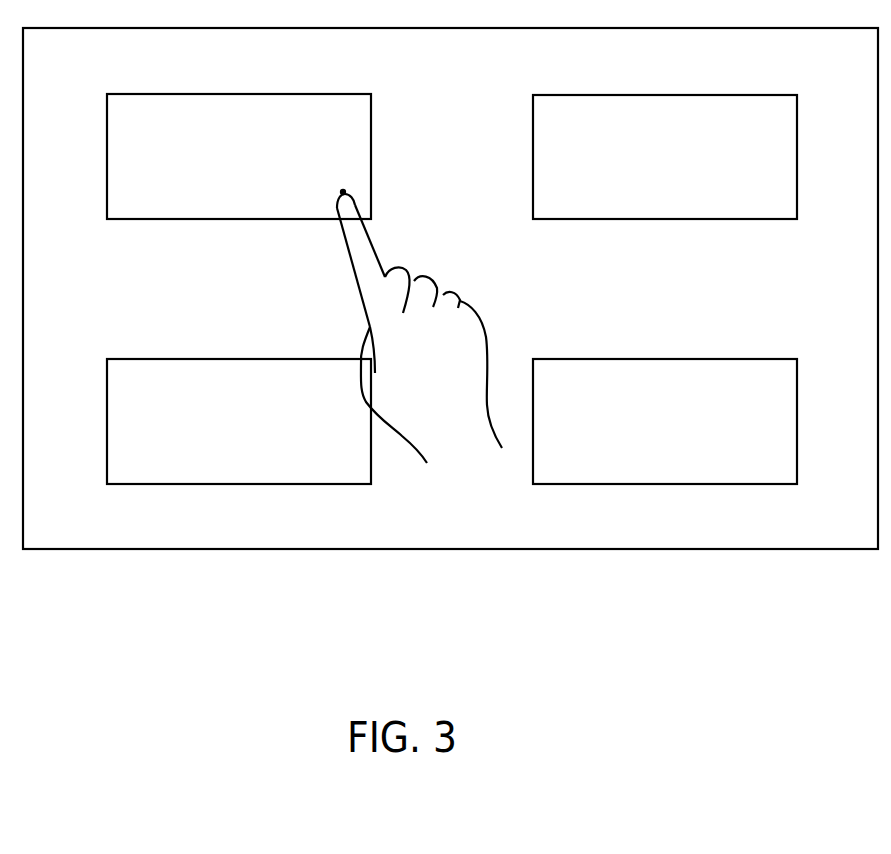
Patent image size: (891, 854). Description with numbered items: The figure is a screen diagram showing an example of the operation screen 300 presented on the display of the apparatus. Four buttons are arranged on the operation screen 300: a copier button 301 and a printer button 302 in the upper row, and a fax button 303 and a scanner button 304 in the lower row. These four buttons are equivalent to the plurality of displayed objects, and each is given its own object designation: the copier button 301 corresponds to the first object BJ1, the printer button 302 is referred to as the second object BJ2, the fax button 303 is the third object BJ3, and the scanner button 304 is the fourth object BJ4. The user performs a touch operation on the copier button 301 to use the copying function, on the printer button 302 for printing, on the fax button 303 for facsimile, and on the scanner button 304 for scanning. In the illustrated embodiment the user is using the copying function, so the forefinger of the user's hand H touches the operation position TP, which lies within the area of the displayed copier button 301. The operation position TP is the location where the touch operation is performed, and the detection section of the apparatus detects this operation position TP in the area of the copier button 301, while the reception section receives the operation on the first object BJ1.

The operation screen 300 is at (279, 553).
The copier button 301 is at (258, 137).
The first object BJ1 is at (268, 94).
The printer button 302 is at (684, 137).
The second object BJ2 is at (695, 95).
The fax button 303 is at (239, 403).
The third object BJ3 is at (193, 359).
The scanner button 304 is at (684, 403).
The fourth object BJ4 is at (695, 359).
The operation position TP is at (343, 192).
The user's hand H is at (482, 313).